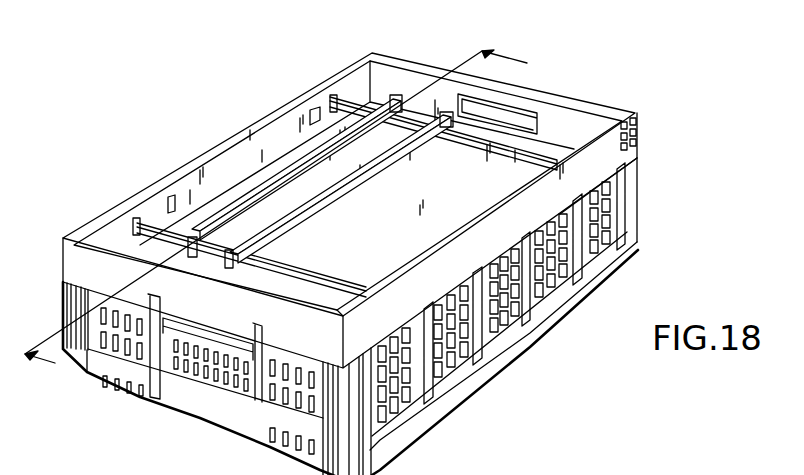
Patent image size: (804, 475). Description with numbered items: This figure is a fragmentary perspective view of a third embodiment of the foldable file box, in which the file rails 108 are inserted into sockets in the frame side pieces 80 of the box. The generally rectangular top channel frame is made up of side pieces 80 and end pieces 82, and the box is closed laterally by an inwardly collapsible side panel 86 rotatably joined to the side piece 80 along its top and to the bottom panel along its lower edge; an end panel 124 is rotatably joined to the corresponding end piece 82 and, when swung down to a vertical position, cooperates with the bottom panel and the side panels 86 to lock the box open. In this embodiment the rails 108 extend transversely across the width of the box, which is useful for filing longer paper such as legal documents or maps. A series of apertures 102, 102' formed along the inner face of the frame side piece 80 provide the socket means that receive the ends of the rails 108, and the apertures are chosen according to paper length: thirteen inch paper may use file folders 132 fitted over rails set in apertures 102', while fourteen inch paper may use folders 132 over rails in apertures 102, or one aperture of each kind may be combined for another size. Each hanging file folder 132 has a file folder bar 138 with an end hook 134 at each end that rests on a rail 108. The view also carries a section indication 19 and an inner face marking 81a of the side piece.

The side piece 80 is at (313, 81).
The aperture 102 is at (269, 138).
The aperture 102' is at (465, 265).
The section line 19- 19 is at (294, 216).
The side wall 81a is at (600, 162).
The side panel 86 is at (603, 226).
The file folder bar 138 is at (366, 172).
The file rail 108 is at (502, 154).
The file folder 132 is at (355, 254).
The end piece 82 is at (320, 344).
The end panel 124 is at (208, 405).
The end hook 134 is at (484, 474).